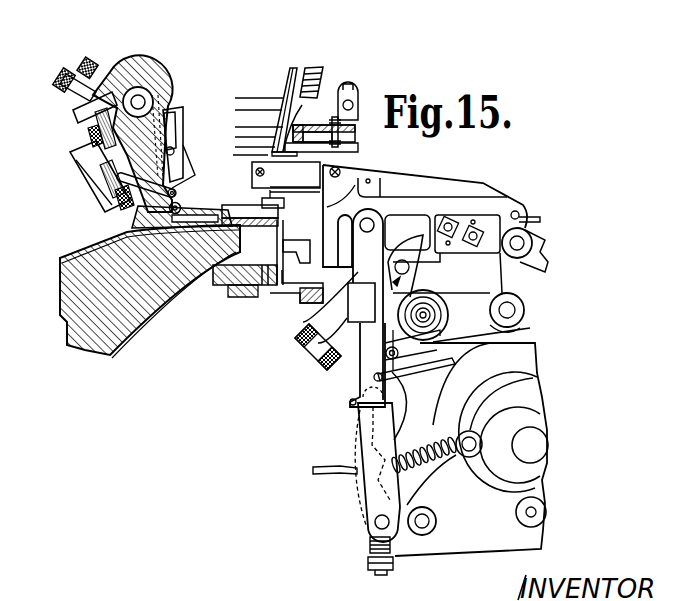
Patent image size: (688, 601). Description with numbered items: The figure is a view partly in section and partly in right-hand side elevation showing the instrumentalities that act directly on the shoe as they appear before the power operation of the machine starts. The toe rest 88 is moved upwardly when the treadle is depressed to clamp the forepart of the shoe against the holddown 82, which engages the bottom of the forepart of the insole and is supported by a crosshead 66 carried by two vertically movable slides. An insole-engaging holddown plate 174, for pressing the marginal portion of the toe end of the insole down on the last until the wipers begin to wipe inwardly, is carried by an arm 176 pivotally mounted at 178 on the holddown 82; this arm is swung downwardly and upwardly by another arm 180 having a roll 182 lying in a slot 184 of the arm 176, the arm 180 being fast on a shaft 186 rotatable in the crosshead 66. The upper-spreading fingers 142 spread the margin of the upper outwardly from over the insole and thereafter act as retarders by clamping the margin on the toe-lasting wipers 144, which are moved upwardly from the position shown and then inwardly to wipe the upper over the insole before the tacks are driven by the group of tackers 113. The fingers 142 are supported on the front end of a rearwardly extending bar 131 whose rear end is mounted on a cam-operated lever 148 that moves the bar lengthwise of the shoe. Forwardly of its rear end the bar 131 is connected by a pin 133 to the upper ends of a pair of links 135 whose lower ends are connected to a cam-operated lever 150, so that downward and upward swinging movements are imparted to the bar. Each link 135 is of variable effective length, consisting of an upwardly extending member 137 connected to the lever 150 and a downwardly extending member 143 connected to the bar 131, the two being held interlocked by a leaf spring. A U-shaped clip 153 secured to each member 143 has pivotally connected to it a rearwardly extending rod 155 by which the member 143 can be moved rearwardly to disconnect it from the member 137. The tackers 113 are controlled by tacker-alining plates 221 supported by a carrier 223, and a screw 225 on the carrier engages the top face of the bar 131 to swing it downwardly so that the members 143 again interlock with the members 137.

The crosshead 66 is at (112, 72).
The shaft 186 is at (140, 100).
The arm 176 is at (170, 118).
The holddown plate 174 is at (182, 123).
The holddown 82 is at (192, 162).
The arm 180 is at (140, 128).
The slot 184 is at (112, 200).
The roll 182 is at (176, 192).
The pivot 178 is at (181, 207).
The upper-spreading fingers 142 is at (240, 207).
The tackers 113 is at (300, 105).
The carrier 223 is at (353, 130).
The screw 225 is at (343, 147).
The tacker-alining plates 221 is at (292, 153).
The toe-lasting wipers 144 is at (290, 240).
The bar 131 is at (452, 190).
The pin 133 is at (370, 224).
The links 135 is at (405, 285).
The cam-operated lever 148 is at (545, 268).
The toe rest 88 is at (242, 278).
The downwardly extending member 143 is at (304, 321).
The U-shaped clip 153 is at (365, 378).
The rod 155 is at (447, 363).
The upwardly extending member 137 is at (375, 497).
The cam-operated lever 150 is at (457, 545).